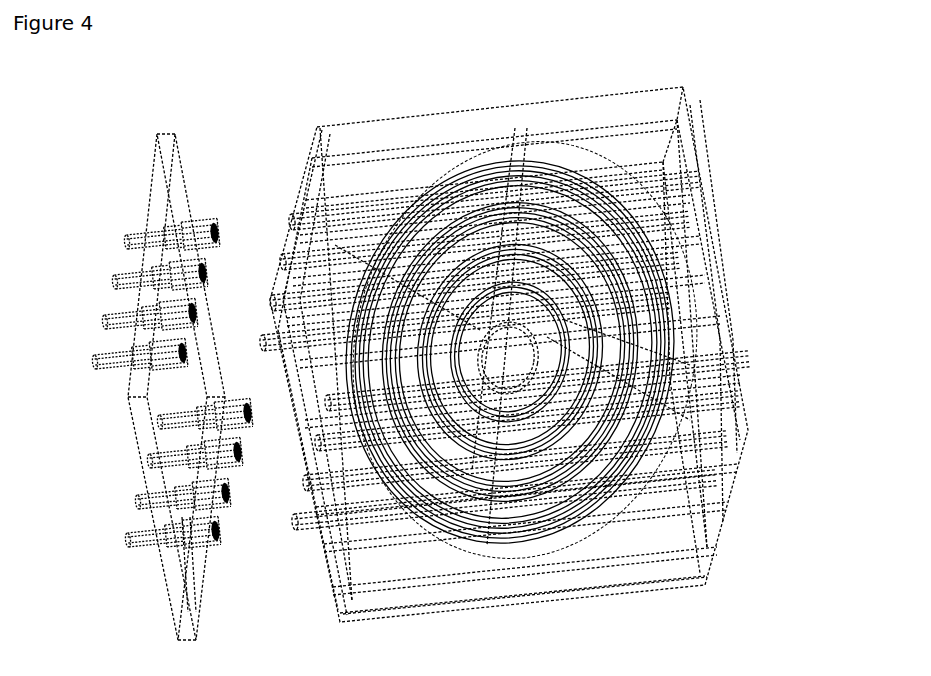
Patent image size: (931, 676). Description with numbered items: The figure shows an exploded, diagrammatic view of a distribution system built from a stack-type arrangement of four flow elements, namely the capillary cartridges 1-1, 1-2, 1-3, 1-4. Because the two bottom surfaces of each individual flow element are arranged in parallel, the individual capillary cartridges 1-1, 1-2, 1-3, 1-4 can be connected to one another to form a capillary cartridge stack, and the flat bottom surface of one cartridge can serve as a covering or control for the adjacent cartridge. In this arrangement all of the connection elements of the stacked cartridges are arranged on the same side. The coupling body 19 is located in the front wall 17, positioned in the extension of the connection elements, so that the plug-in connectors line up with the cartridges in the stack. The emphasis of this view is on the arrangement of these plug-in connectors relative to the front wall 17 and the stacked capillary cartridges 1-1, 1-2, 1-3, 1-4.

The capillary cartridge 1-1 is at (712, 562).
The capillary cartridge 1-2 is at (723, 523).
The capillary cartridge 1-3 is at (735, 487).
The capillary cartridge 1-4 is at (745, 445).
The front wall 17 is at (180, 573).
The coupling body 19 is at (127, 248).